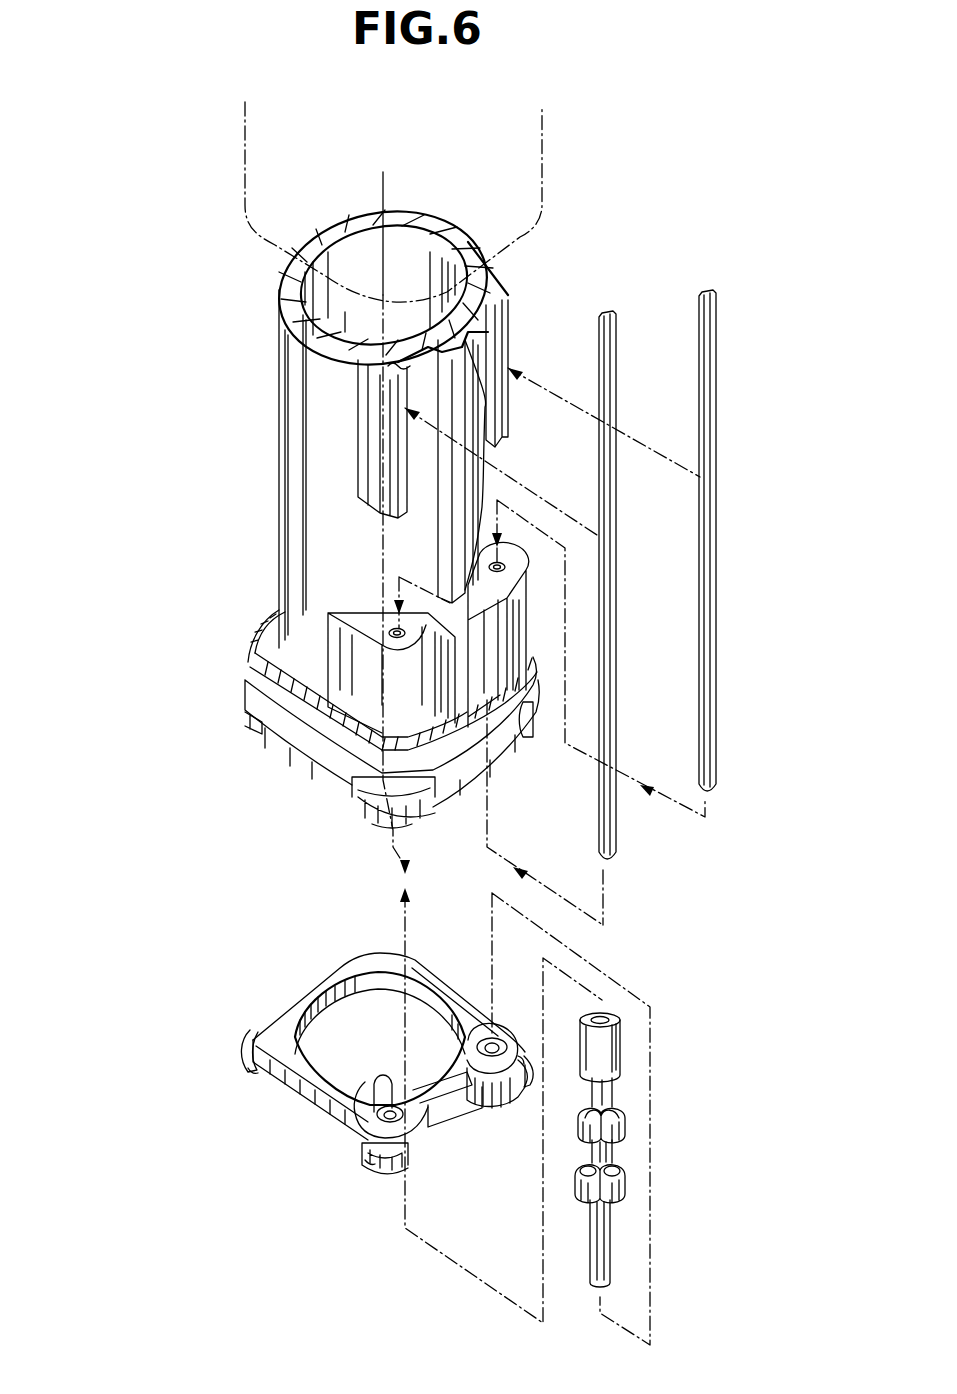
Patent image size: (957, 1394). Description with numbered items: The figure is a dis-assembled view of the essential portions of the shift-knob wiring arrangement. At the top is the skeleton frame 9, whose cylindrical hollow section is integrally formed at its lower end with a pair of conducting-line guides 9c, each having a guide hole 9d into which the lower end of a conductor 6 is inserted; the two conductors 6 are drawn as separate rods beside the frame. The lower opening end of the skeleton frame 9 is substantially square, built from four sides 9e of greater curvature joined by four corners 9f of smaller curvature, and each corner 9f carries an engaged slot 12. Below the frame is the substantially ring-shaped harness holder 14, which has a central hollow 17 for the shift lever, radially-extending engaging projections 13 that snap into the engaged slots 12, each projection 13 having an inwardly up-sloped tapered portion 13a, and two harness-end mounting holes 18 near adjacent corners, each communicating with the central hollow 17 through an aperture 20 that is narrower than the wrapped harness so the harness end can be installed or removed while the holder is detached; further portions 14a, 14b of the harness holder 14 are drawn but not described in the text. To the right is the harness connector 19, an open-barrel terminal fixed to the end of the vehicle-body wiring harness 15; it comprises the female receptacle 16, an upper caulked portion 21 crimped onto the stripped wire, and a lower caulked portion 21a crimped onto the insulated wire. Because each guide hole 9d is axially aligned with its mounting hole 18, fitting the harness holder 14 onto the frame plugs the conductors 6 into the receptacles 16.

The skeleton frame 9 is at (295, 470).
The conducting-line guide 9c is at (390, 693).
The guide hole 9d is at (385, 625).
The side 9e is at (307, 770).
The corner 9f is at (387, 818).
The conductor 6 is at (619, 593).
The engaged slot 12 is at (250, 725).
The engaging projection 13 is at (248, 1045).
The tapered portion 13a is at (243, 1067).
The harness holder 14 is at (404, 1061).
The arm 14a is at (457, 1112).
The arm 14b is at (457, 1090).
The vehicle-body wiring harness 15 is at (600, 1227).
The female receptacle 16 is at (613, 1058).
The central hollow 17 is at (323, 998).
The harness-end mounting hole 18 is at (495, 1038).
The harness connector 19 is at (645, 1117).
The aperture 20 is at (380, 1074).
The upper caulked portion 21 is at (627, 1125).
The lower caulked portion 21a is at (620, 1182).